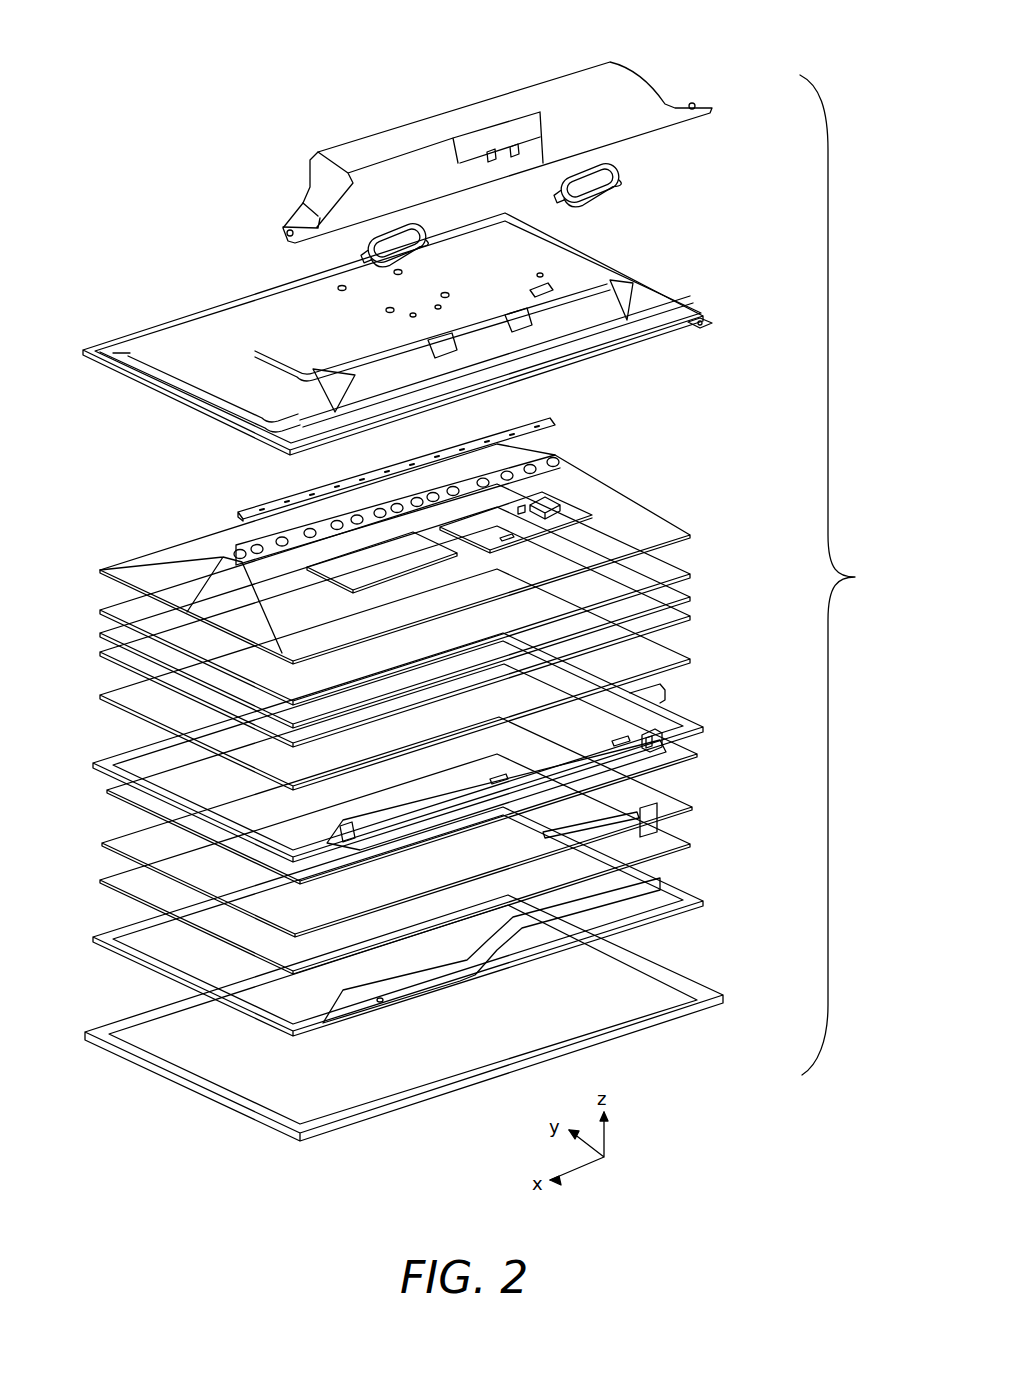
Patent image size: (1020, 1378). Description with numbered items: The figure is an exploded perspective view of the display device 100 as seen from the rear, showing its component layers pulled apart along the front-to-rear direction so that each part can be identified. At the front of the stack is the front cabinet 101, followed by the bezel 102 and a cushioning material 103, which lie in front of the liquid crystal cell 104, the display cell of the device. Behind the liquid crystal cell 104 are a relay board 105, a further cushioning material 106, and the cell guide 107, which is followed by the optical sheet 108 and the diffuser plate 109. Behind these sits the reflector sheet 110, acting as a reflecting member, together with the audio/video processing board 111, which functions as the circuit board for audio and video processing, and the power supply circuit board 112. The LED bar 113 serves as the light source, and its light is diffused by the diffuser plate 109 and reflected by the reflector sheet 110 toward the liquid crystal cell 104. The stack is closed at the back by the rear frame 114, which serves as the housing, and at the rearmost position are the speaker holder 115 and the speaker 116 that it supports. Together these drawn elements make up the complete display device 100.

The display device 100 is at (697, 53).
The front cabinet 101 is at (727, 995).
The bezel 102 is at (710, 898).
The cushioning material 103 is at (697, 843).
The liquid crystal cell 104 is at (697, 808).
The relay board 105 is at (655, 805).
The cushioning material 106 is at (693, 748).
The cell guide 107 is at (700, 713).
The optical sheet 108 is at (703, 590).
The diffuser plate 109 is at (690, 575).
The reflector sheet 110 is at (690, 535).
The audio/video processing board 111 is at (593, 527).
The power supply circuit board 112 is at (560, 462).
The LED bar 113 is at (550, 417).
The rear frame 114 is at (697, 305).
The speaker holder 115 is at (660, 93).
The speaker 116 is at (437, 247).